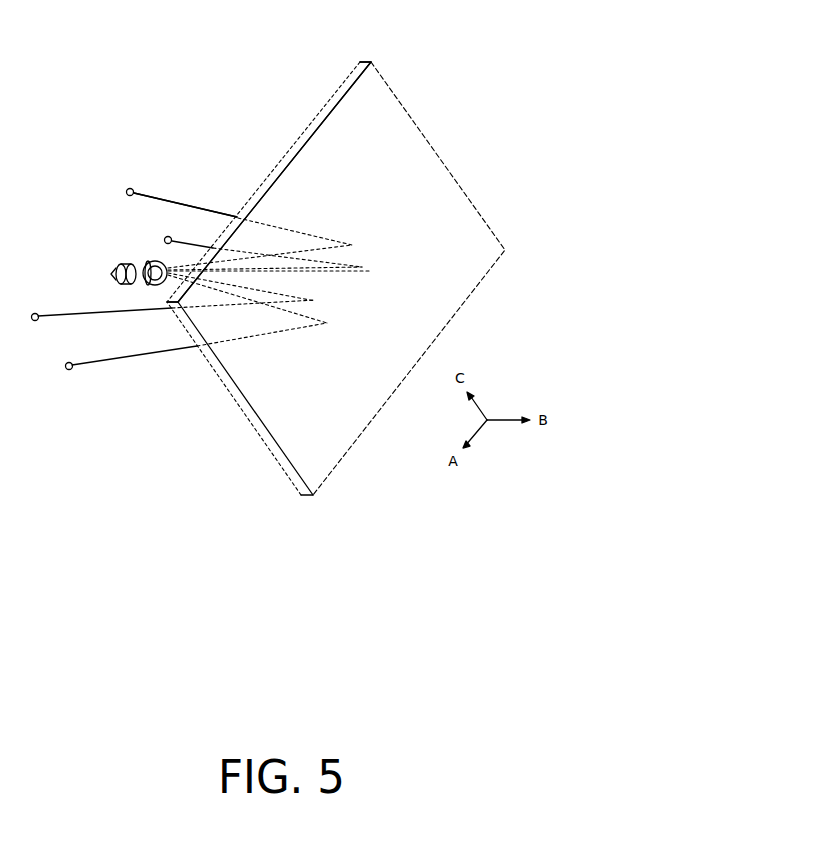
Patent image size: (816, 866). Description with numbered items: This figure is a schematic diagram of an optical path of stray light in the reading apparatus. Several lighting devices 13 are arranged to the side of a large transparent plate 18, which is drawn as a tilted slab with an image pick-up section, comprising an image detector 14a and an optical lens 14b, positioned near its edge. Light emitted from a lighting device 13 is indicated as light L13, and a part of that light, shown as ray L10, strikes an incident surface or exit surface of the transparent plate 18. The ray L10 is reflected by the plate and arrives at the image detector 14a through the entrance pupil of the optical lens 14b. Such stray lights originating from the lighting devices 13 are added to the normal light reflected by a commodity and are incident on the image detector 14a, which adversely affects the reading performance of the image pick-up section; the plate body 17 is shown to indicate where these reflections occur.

The lighting device 13 is at (165, 238).
The image detector 14a is at (117, 267).
The optical lens 14b is at (137, 250).
The light guide plate 17 is at (434, 82).
The transparent plate 18 is at (345, 108).
The ray L10 is at (192, 247).
The light beam from light source L13 is at (127, 190).